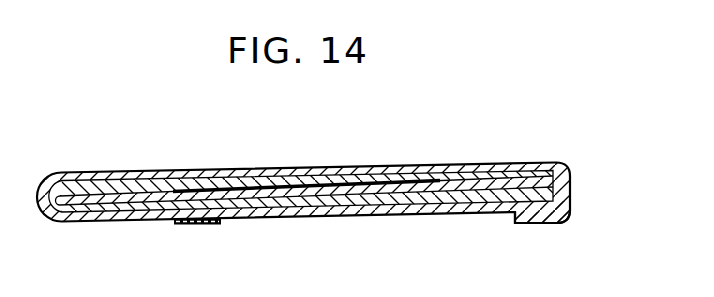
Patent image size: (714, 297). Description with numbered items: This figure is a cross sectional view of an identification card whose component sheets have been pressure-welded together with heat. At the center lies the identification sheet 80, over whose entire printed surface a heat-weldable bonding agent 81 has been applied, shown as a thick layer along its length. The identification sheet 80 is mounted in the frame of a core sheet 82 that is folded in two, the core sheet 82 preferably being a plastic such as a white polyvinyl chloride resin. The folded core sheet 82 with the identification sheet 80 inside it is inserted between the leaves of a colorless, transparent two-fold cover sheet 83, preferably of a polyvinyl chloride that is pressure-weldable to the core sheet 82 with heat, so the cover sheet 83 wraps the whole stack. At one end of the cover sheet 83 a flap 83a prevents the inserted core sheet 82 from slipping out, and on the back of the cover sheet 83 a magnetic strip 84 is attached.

The identification sheet 80 is at (203, 183).
The heat-weldable bonding agent 81 is at (333, 184).
The core sheet 82 is at (141, 206).
The cover sheet 83 is at (481, 165).
The flap 83a is at (534, 219).
The magnetic strip 84 is at (201, 225).